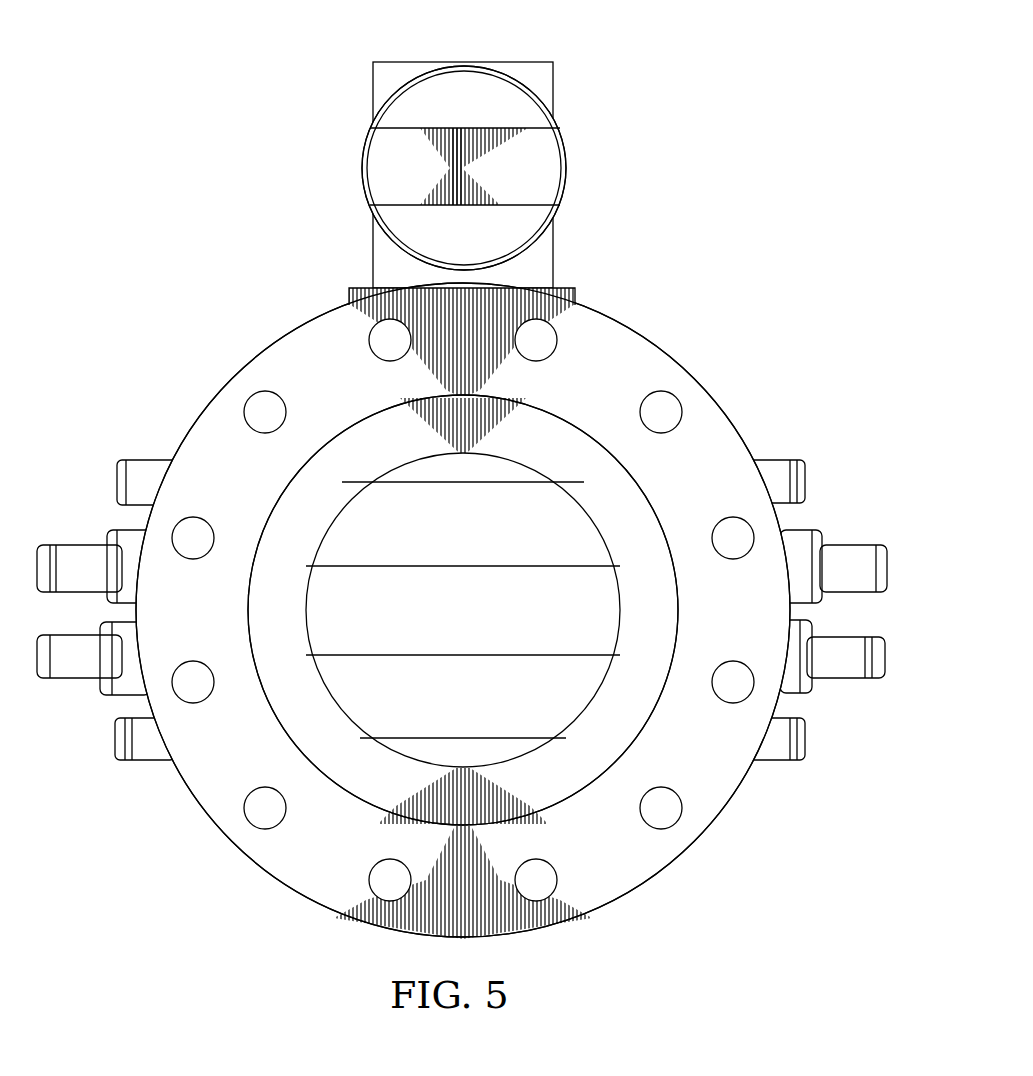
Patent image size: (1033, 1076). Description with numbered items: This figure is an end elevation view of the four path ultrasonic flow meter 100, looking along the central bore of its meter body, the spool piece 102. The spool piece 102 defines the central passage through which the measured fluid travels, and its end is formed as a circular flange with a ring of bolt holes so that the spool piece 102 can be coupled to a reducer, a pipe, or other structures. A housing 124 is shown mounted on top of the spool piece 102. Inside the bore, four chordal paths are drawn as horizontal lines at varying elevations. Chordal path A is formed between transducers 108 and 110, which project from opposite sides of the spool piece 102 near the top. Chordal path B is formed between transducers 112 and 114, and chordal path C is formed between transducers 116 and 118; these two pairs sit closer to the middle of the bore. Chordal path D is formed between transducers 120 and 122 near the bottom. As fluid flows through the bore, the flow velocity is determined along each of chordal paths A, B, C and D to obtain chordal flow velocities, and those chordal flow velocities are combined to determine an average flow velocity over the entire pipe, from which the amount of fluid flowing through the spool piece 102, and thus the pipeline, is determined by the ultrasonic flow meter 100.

The ultrasonic flow meter 100 is at (680, 98).
The spool piece 102 is at (245, 364).
The transducer 108 is at (117, 485).
The transducer 110 is at (805, 484).
The transducer 112 is at (75, 543).
The transducer 114 is at (852, 545).
The transducer 116 is at (70, 680).
The transducer 118 is at (852, 680).
The transducer 120 is at (115, 740).
The transducer 122 is at (805, 740).
The top housing 124 is at (362, 172).
The chordal path A is at (480, 489).
The chordal path B is at (440, 569).
The chordal path C is at (478, 659).
The chordal path D is at (440, 734).